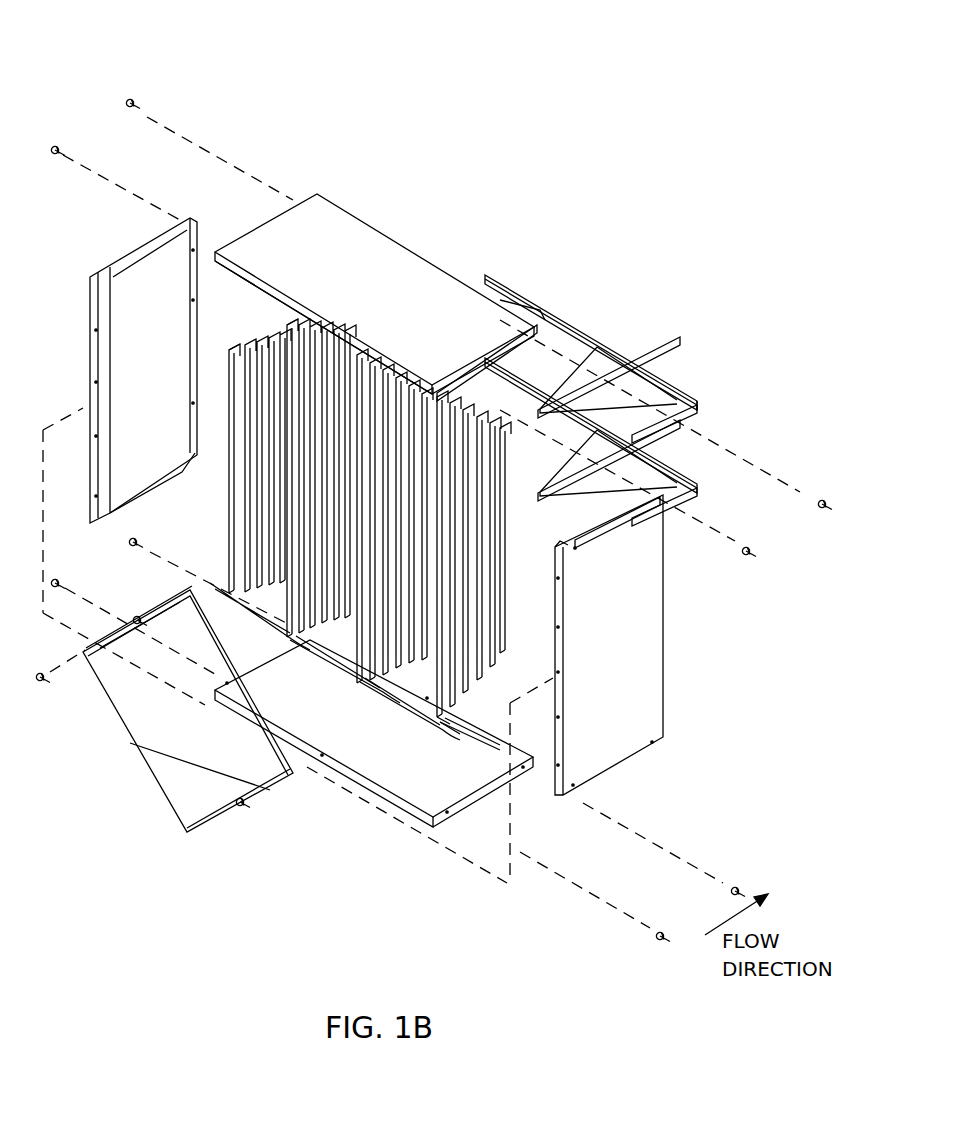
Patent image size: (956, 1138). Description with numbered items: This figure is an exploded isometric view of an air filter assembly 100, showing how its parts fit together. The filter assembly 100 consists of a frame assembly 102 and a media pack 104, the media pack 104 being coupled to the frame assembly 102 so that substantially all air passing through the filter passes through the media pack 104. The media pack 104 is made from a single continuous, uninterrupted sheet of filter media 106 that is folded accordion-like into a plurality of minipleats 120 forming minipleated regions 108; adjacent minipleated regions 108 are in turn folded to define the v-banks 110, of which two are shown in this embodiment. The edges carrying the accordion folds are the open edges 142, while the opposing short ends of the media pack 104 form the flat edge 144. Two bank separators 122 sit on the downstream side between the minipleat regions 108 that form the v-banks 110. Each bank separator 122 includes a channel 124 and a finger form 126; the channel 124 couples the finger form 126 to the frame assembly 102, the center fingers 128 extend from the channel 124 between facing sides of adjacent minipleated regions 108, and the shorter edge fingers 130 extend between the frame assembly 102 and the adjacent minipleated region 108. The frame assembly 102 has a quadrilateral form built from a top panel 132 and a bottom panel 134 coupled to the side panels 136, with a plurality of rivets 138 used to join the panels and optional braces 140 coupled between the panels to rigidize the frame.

The filter assembly 100 is at (572, 137).
The frame assembly 102 is at (373, 222).
The media pack 104 is at (520, 560).
The filter media 106 is at (297, 487).
The minipleated region 108 is at (453, 712).
The v-bank 110 is at (400, 698).
The minipleats 120 is at (457, 720).
The bank separator 122 is at (625, 346).
The channel 124 is at (657, 376).
The finger form 126 is at (686, 411).
The center fingers 128 is at (578, 404).
The edge fingers 130 is at (652, 427).
The top panel 132 is at (303, 197).
The bottom panel 134 is at (387, 808).
The side panels 136 is at (118, 258).
The rivets 138 is at (130, 100).
The braces 140 is at (112, 713).
The open edges 142 is at (292, 322).
The flat edge 144 is at (230, 362).